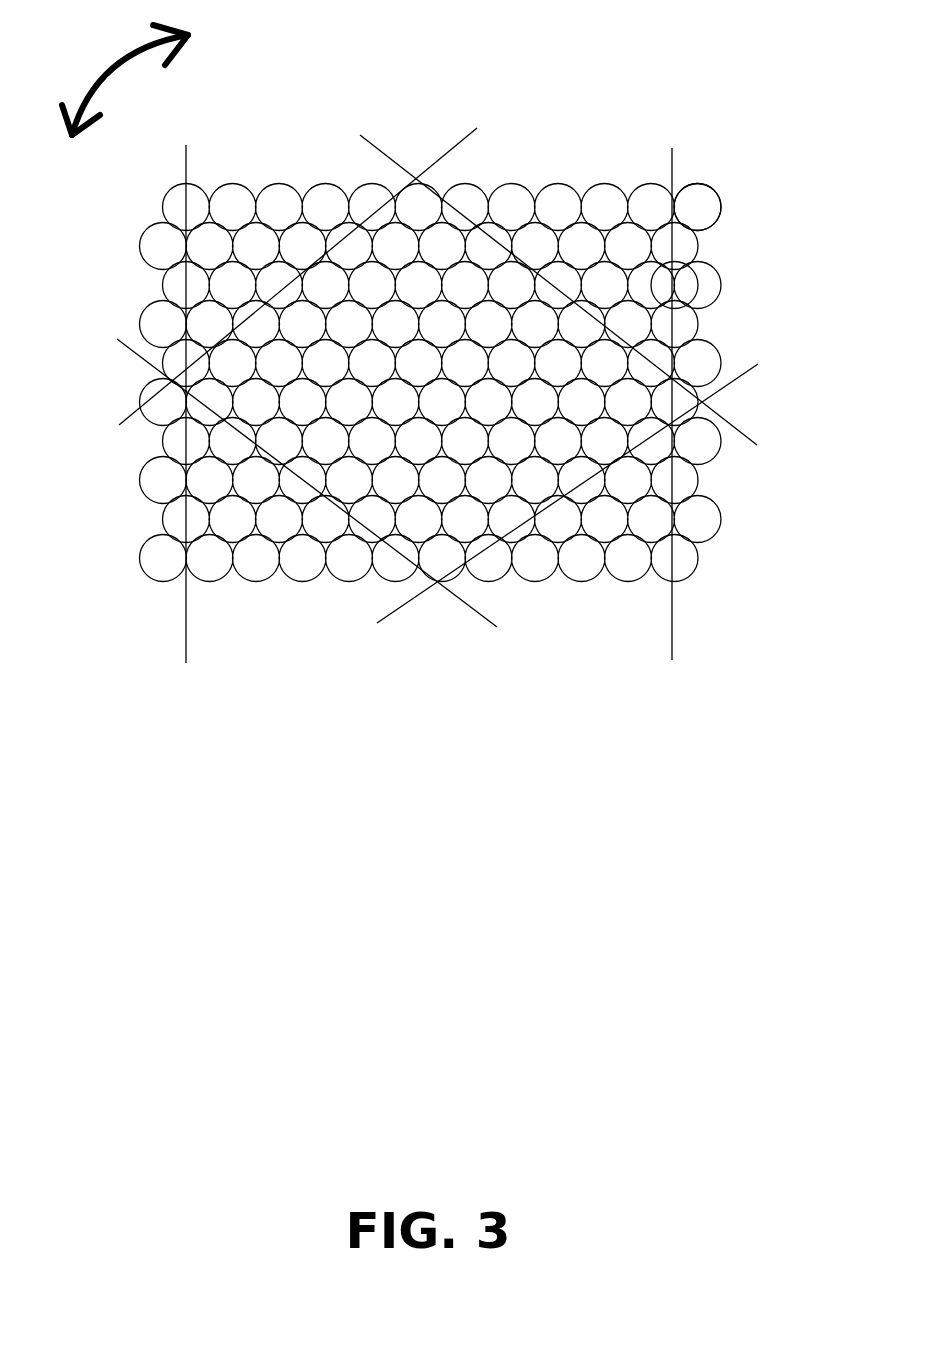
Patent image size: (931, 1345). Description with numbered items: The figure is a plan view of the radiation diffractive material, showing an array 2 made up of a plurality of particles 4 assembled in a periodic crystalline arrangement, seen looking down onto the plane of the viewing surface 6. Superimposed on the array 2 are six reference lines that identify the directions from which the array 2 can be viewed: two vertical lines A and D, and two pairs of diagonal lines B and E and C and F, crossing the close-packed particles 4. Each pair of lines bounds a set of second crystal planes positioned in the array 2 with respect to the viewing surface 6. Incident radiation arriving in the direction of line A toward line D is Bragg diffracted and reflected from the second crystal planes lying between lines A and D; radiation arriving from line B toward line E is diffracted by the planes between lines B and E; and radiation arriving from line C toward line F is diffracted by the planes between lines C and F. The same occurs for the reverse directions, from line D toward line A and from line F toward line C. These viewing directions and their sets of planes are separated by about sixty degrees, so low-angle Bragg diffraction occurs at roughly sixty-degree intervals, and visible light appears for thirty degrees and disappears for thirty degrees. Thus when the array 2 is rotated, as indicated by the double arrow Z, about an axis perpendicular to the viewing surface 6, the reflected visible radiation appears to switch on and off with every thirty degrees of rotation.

The array 2 is at (572, 136).
The particles 4 is at (695, 207).
The viewing surface 6 is at (430, 380).
The line A is at (678, 160).
The line B is at (740, 382).
The line C is at (463, 607).
The line D is at (172, 637).
The line E is at (125, 405).
The line F is at (378, 140).
The double arrow Z is at (143, 74).